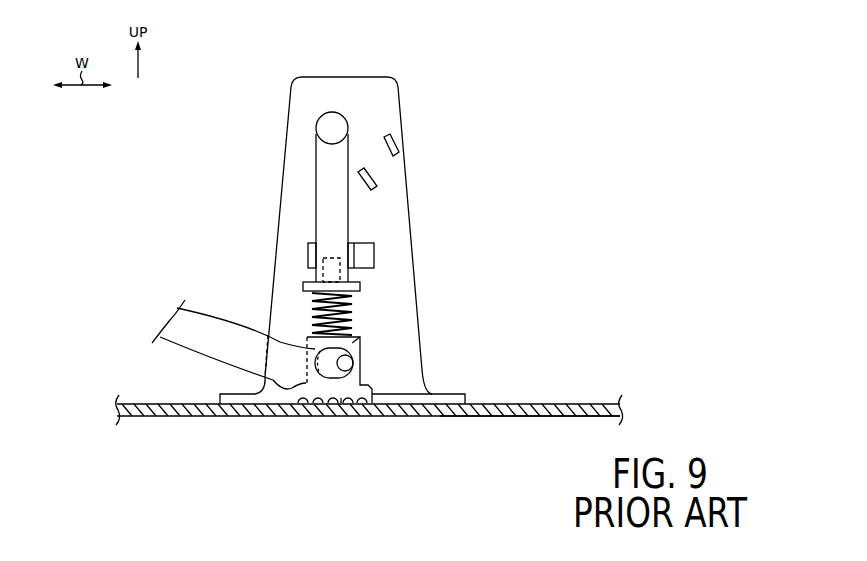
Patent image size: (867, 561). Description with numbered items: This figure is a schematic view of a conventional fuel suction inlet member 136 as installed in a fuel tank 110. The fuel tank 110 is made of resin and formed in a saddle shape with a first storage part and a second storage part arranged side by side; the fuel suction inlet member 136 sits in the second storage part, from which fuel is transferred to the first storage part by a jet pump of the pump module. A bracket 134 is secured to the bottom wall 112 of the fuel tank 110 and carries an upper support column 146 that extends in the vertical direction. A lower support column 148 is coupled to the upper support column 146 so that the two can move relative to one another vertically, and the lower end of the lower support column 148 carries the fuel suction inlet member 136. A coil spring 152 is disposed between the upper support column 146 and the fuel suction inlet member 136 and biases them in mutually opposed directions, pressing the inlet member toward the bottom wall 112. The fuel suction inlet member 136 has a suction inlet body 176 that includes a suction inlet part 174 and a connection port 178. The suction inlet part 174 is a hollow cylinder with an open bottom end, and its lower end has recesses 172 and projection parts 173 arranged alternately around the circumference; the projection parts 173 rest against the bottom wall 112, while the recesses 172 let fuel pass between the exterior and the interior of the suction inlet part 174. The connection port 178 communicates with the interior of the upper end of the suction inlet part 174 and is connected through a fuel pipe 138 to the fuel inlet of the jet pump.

The fuel tank 110 is at (524, 424).
The bottom wall 112 is at (157, 408).
The bracket 134 is at (279, 117).
The fuel suction inlet member 136 is at (372, 367).
The fuel pipe 138 is at (183, 332).
The upper support column 146 is at (323, 163).
The lower support column 148 is at (312, 307).
The coil spring 152 is at (310, 299).
The recesses 172 is at (332, 404).
The projection parts 173 is at (355, 404).
The suction inlet part 174 is at (392, 394).
The suction inlet body 176 is at (352, 343).
The connection port 178 is at (353, 363).